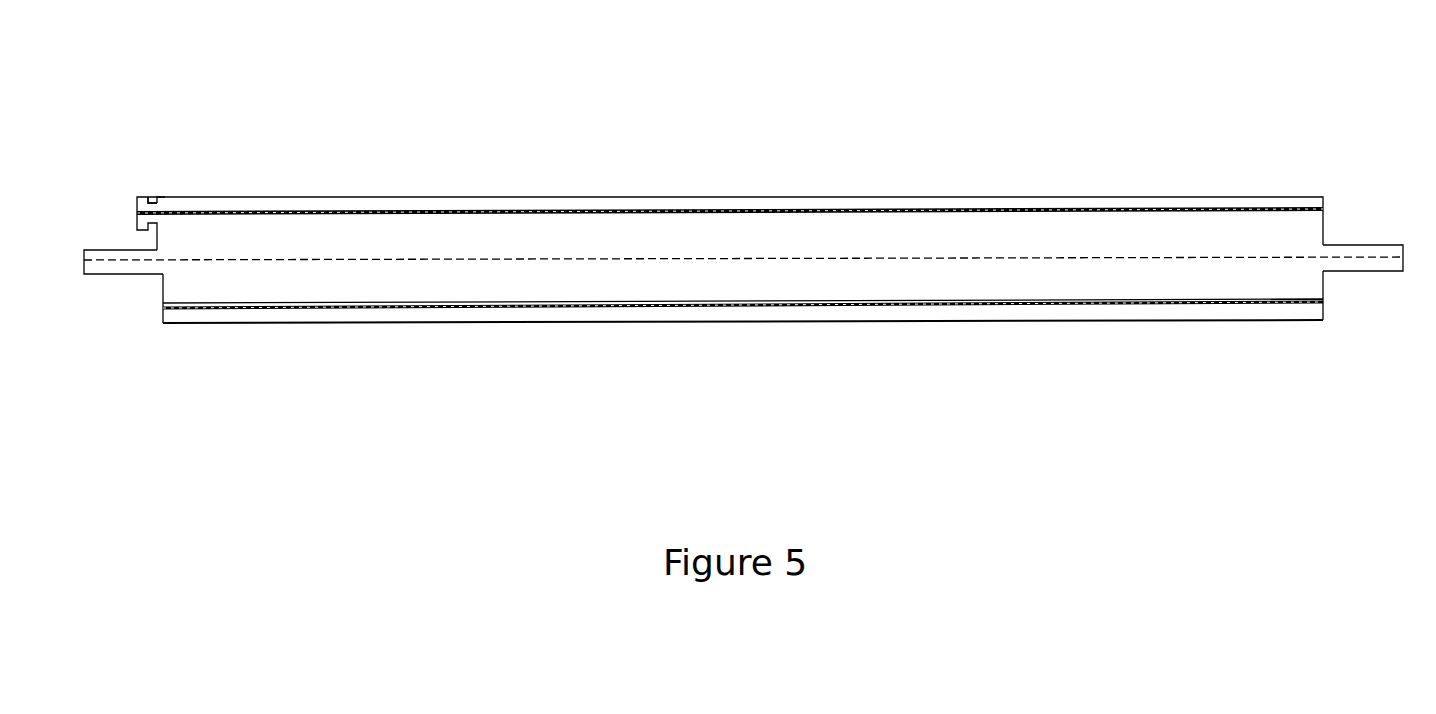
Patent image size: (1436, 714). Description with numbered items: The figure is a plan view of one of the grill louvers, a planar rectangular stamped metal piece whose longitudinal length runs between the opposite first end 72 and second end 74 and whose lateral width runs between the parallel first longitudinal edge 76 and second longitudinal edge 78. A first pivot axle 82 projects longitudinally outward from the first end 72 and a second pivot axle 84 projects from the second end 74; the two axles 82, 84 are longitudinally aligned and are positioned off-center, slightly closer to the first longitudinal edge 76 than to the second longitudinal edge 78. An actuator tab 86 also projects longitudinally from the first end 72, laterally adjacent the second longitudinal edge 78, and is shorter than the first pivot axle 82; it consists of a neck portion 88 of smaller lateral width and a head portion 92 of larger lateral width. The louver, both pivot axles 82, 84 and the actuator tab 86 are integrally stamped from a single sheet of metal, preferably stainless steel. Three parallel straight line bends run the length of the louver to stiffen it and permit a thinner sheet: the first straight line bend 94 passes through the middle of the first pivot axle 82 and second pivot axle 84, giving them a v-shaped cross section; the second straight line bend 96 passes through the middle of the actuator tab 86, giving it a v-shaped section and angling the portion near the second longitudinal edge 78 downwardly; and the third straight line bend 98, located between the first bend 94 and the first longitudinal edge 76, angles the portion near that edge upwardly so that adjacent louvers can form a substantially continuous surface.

The first end 72 is at (173, 295).
The second end 74 is at (1323, 285).
The first longitudinal edge 76 is at (482, 327).
The second longitudinal edge 78 is at (472, 193).
The first pivot axle 82 is at (102, 268).
The second pivot axle 84 is at (1337, 245).
The actuator tab 86 is at (135, 207).
The neck portion 88 is at (157, 197).
The head portion 92 is at (147, 197).
The first straight line bend 94 is at (367, 262).
The second straight line bend 96 is at (590, 208).
The third straight line bend 98 is at (592, 307).